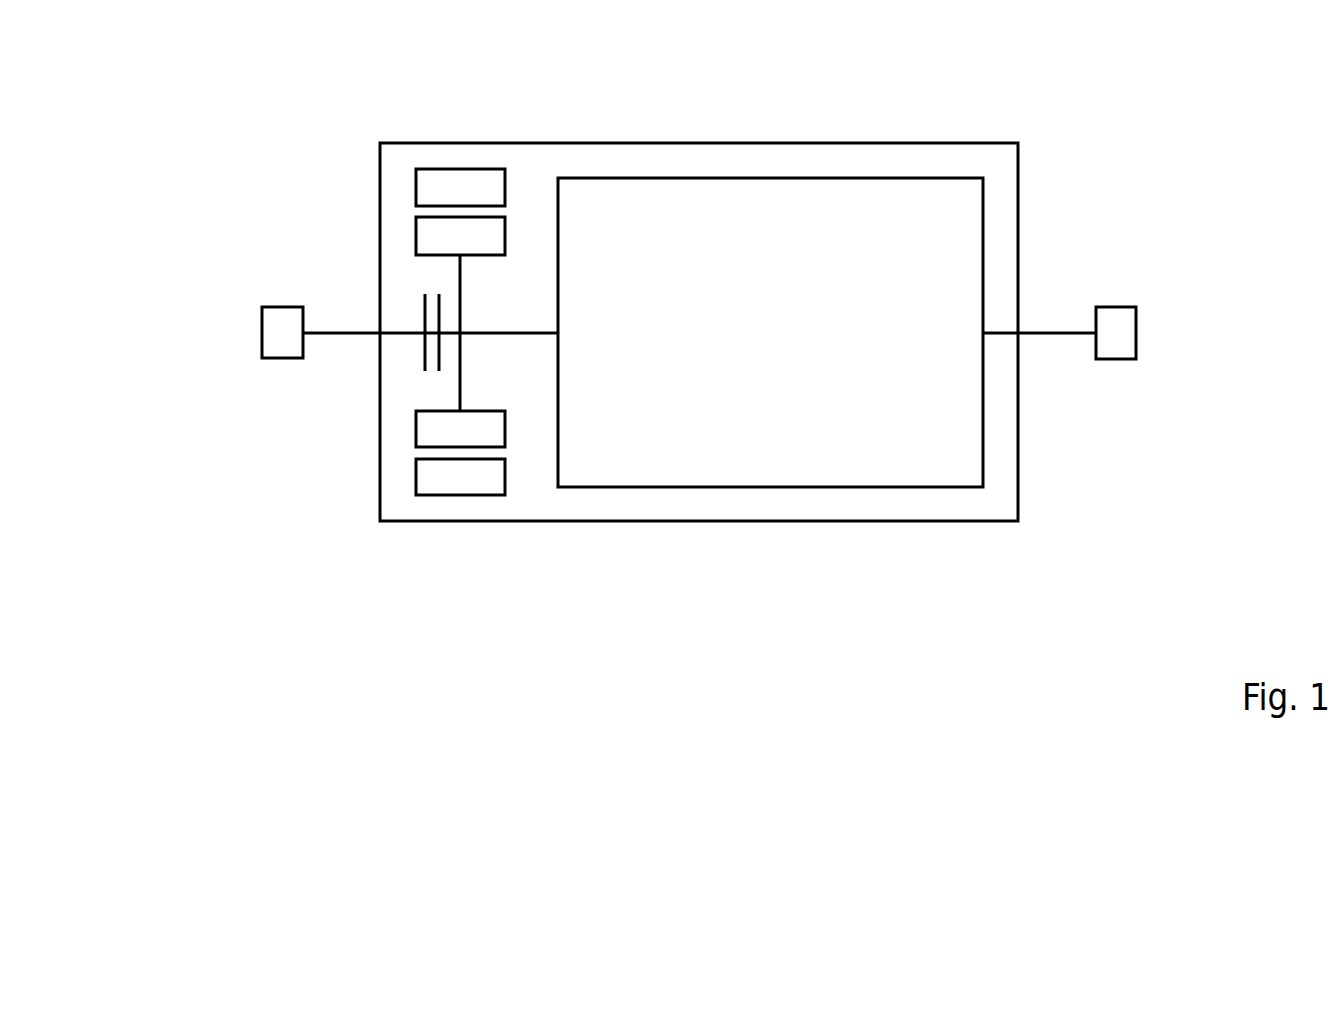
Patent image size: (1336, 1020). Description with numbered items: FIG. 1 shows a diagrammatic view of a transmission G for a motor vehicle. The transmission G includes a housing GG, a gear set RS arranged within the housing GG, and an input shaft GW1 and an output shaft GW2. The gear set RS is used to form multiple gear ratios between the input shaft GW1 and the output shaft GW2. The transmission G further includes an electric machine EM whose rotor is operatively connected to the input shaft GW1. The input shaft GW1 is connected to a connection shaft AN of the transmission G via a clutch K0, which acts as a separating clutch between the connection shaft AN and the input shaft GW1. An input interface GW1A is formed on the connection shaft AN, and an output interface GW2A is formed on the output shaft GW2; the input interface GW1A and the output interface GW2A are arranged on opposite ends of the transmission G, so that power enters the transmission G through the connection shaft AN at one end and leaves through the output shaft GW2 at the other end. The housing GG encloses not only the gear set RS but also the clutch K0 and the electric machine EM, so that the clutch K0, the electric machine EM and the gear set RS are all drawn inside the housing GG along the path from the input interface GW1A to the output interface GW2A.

The transmission G is at (648, 333).
The housing GG is at (815, 143).
The gear set RS is at (890, 178).
The electric machine EM is at (396, 193).
The clutch K0 is at (402, 297).
The input shaft GW1 is at (522, 333).
The output shaft GW2 is at (1056, 334).
The connection shaft AN is at (352, 333).
The input interface GW1A is at (262, 338).
The output interface GW2A is at (1136, 337).